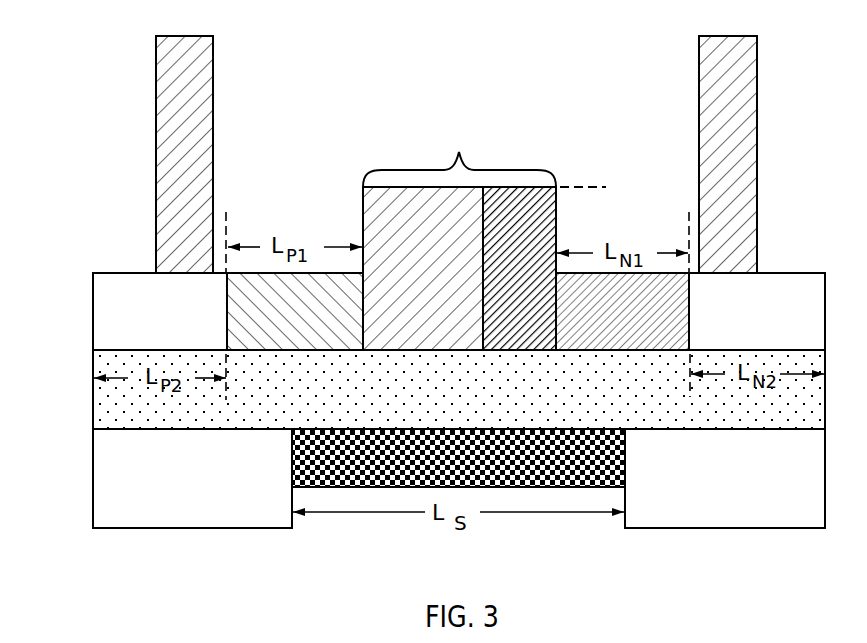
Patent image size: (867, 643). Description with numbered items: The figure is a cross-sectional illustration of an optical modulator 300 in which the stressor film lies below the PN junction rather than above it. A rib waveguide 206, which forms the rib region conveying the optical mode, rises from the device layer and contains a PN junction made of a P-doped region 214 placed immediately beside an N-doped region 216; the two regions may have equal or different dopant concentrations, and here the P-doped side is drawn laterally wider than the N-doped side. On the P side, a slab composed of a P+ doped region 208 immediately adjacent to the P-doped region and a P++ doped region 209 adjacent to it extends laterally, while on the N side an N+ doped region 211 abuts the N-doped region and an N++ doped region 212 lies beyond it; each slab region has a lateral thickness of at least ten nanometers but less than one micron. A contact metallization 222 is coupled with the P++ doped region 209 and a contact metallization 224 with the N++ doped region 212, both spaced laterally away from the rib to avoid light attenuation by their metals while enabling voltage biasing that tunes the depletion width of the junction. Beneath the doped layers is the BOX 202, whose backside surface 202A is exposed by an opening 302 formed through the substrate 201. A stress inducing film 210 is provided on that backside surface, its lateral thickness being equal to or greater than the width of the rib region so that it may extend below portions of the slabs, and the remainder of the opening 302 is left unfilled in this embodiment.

The optical modulator 300 is at (107, 76).
The opening 302 is at (372, 535).
The substrate 201 is at (745, 486).
The BOX 202 is at (441, 406).
The backside surface 202A is at (410, 424).
The rib waveguide 206 is at (484, 154).
The P+ doped region 208 is at (278, 324).
The P++ doped region 209 is at (143, 324).
The stress inducing film 210 is at (441, 471).
The N+ doped region 211 is at (603, 324).
The N++ doped region 212 is at (740, 324).
The P-doped region 214 is at (396, 324).
The N-doped region 216 is at (503, 324).
The contact metallization 222 is at (180, 121).
The contact metallization 224 is at (724, 87).